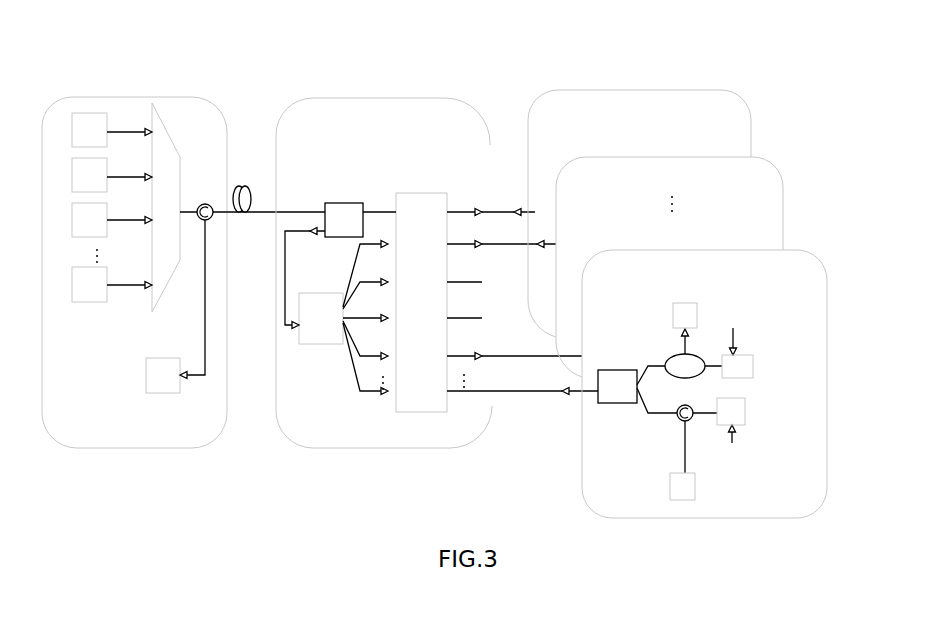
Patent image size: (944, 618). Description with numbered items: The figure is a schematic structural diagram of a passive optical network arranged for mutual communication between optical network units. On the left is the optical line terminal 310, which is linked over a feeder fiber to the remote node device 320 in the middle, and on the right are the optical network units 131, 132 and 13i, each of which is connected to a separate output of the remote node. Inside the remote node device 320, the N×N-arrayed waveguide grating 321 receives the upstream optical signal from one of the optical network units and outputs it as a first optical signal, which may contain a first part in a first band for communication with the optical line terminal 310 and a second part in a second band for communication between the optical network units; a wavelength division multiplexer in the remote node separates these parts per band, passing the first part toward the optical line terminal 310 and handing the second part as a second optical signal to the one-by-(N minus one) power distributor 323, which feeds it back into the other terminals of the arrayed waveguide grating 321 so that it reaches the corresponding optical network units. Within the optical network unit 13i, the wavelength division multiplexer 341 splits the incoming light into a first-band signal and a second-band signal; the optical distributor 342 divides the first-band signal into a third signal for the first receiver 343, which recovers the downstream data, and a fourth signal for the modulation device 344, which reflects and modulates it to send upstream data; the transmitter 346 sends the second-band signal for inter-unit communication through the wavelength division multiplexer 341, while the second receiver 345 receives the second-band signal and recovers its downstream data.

The optical line terminal (central office) 310 is at (192, 96).
The remote node device 320 is at (453, 98).
The N×N-arrayed waveguide grating 321 is at (340, 203).
The 1×(N−1) power distributor 323 is at (315, 345).
The optical network unit 1 131 is at (747, 106).
The optical network unit 2 132 is at (783, 190).
The optical network unit i 13i is at (825, 258).
The wavelength division multiplexer 341 is at (604, 370).
The optical distributor 342 is at (698, 355).
The first receiver 343 is at (698, 309).
The modulation device 344 is at (753, 360).
The second receiver 345 is at (670, 485).
The transmitter 346 is at (745, 398).